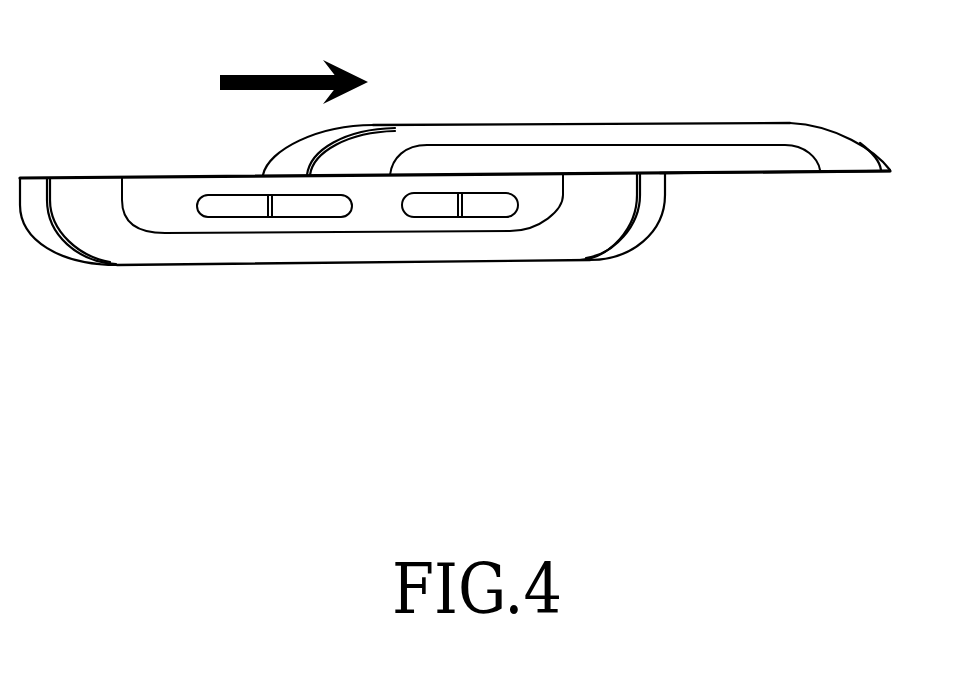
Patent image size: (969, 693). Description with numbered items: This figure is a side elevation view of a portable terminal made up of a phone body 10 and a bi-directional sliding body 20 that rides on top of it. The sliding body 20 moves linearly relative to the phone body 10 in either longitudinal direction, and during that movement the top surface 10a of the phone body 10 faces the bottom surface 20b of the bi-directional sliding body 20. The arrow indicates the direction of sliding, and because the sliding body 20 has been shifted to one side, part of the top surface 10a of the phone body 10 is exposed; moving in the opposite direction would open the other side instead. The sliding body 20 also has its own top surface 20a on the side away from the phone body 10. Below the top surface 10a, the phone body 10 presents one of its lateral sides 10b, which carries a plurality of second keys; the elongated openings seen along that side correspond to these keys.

The phone body 10 is at (449, 277).
The top surface of the phone body 10a is at (85, 177).
The lateral side of the phone body 10b is at (300, 263).
The bi-directional sliding body 20 is at (676, 112).
The top surface of the bi-directional sliding body 20a is at (505, 123).
The bottom surface of the bi-directional sliding body 20b is at (760, 173).